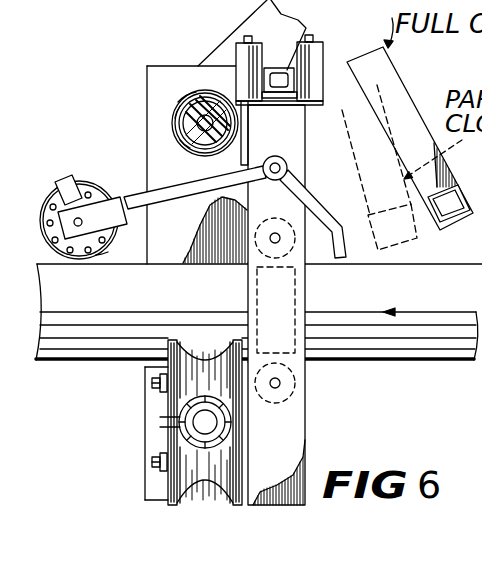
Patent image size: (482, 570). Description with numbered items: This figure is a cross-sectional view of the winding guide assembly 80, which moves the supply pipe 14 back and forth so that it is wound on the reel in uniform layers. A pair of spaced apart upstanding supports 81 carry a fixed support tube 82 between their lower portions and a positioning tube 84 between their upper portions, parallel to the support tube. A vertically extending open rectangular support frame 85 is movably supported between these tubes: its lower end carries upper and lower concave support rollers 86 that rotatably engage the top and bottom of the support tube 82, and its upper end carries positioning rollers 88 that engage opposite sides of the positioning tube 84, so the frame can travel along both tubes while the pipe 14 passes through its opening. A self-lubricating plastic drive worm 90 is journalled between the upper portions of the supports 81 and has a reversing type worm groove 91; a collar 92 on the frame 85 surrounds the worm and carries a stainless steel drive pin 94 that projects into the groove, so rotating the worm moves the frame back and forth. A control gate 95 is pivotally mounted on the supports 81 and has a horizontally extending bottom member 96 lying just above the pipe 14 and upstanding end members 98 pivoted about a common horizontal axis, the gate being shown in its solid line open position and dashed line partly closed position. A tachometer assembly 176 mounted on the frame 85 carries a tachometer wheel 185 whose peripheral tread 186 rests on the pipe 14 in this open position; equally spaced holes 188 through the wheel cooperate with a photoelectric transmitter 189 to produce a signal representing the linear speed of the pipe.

The supply pipe 14 is at (402, 348).
The winding guide assembly 80 is at (132, 443).
The upstanding supports 81 is at (160, 68).
The fixed support tube 82 is at (178, 418).
The positioning tube 84 is at (297, 67).
The support frame 85 is at (305, 431).
The concave support rollers 86 is at (177, 396).
The positioning rollers 88 is at (241, 48).
The drive worm 90 is at (187, 150).
The worm groove 91 is at (176, 114).
The collar 92 is at (223, 95).
The drive pin 94 is at (196, 96).
The control gate 95 is at (415, 85).
The bottom member 96 is at (452, 223).
The end members 98 is at (388, 67).
The tachometer assembly 176 is at (135, 172).
The tachometer wheel 185 is at (52, 257).
The peripheral tread 186 is at (105, 252).
The holes 188 is at (99, 260).
The photoelectric transmitter 189 is at (88, 152).